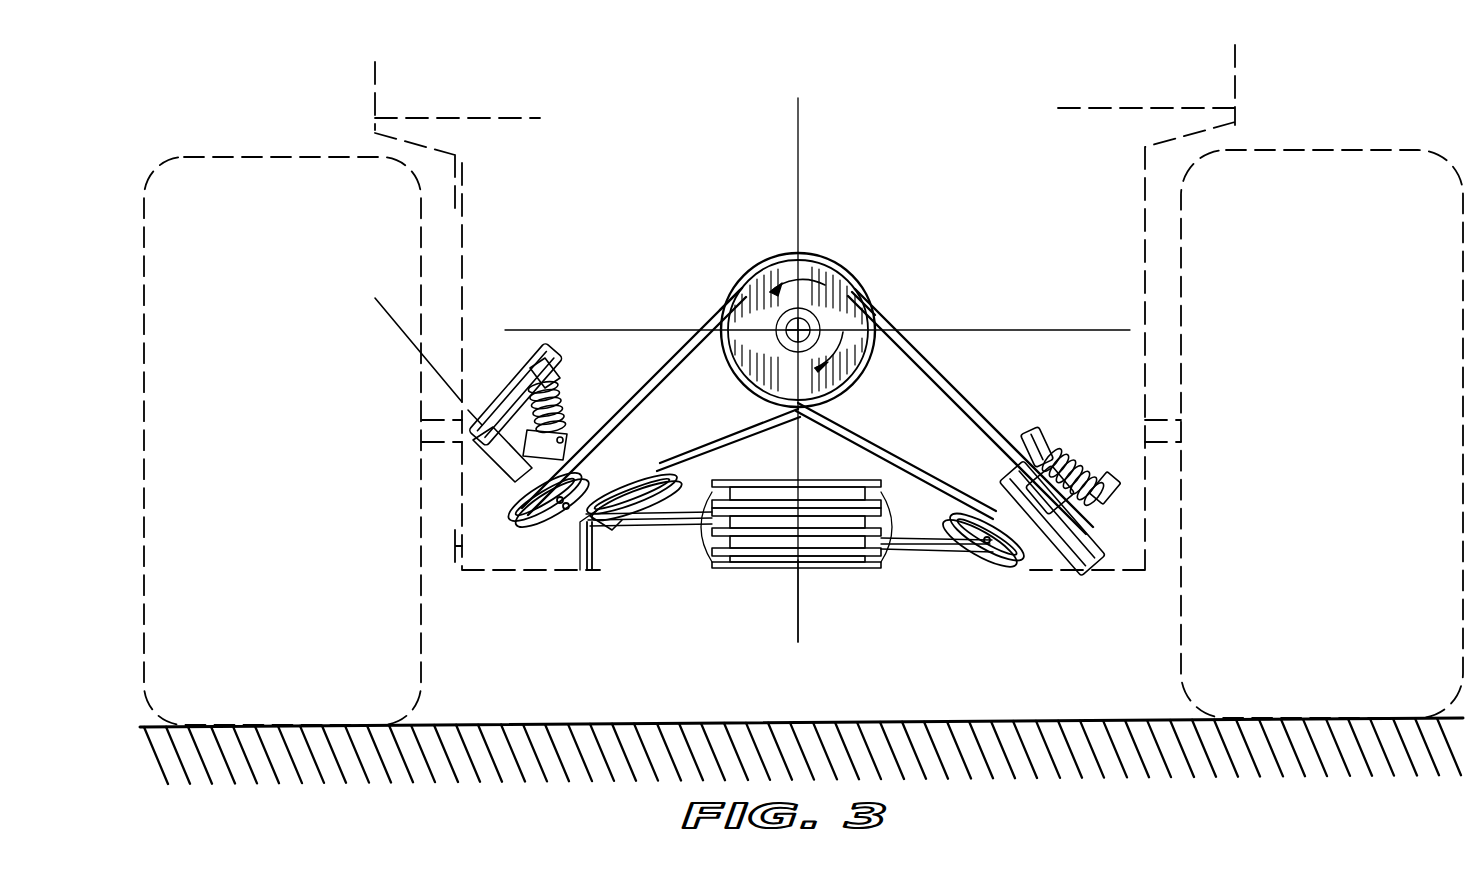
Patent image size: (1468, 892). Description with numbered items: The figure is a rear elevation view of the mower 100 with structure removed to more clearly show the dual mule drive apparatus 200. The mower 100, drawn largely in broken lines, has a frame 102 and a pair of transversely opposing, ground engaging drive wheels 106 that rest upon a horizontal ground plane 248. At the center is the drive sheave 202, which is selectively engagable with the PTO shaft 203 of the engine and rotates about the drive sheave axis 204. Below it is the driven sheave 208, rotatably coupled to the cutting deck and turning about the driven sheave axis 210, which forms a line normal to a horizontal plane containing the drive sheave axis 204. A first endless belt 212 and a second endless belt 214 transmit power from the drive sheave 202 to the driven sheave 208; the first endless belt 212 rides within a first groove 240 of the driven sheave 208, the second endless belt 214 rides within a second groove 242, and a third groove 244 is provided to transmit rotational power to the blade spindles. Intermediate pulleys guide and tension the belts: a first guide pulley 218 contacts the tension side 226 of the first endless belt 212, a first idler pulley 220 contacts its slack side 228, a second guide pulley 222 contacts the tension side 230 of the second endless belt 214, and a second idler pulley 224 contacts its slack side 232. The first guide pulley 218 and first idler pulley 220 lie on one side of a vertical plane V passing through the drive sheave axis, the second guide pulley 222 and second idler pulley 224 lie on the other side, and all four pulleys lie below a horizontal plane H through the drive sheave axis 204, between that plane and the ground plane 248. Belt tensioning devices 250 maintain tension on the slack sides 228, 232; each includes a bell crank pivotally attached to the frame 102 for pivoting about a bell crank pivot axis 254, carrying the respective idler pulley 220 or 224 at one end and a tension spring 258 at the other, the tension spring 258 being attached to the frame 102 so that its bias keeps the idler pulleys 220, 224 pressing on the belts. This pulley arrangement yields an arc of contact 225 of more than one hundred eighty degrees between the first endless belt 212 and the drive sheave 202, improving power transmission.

The mower 100 is at (928, 96).
The frame 102 is at (527, 337).
The drive wheels 106 is at (256, 137).
The dual mule drive apparatus 200 is at (966, 302).
The drive sheave 202 is at (758, 252).
The PTO shaft 203 is at (824, 318).
The drive sheave axis 204 is at (790, 326).
The driven sheave 208 is at (763, 570).
The driven sheave axis 210 is at (800, 613).
The first endless belt 212 is at (696, 342).
The second endless belt 214 is at (922, 378).
The first guide pulley 218 is at (590, 535).
The first idler pulley 220 is at (498, 497).
The second guide pulley 222 is at (1105, 536).
The second idler pulley 224 is at (1013, 563).
The arc of contact 225 is at (822, 270).
The tension side 226 is at (700, 475).
The slack side 228 is at (603, 418).
The tension side 230 is at (960, 392).
The slack side 232 is at (885, 450).
The first groove 240 is at (905, 557).
The second groove 242 is at (705, 548).
The third groove 244 is at (723, 550).
The ground plane 248 is at (965, 722).
The belt tensioning device 250 is at (498, 372).
The bell crank pivot axis 254 is at (390, 318).
The tension spring 258 is at (485, 445).
The vertical plane V is at (797, 108).
The horizontal plane H is at (817, 308).